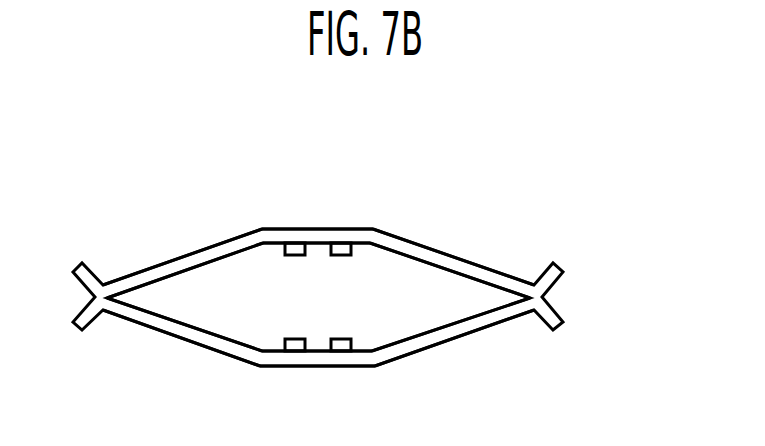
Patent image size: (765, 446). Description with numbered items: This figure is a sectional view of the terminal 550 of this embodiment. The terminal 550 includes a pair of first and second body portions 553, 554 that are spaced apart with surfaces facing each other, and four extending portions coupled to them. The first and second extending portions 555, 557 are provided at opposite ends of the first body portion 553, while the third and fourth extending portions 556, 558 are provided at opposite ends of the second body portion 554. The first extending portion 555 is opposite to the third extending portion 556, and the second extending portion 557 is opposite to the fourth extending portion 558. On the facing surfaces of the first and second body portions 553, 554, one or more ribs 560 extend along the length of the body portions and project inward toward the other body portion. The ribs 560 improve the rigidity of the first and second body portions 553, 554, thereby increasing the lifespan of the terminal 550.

The terminal 550 is at (614, 175).
The first body portion 553 is at (347, 367).
The second body portion 554 is at (345, 230).
The first extending portion 555 is at (463, 333).
The third extending portion 556 is at (457, 262).
The second extending portion 557 is at (197, 337).
The fourth extending portion 558 is at (197, 257).
The ribs 560 is at (342, 346).